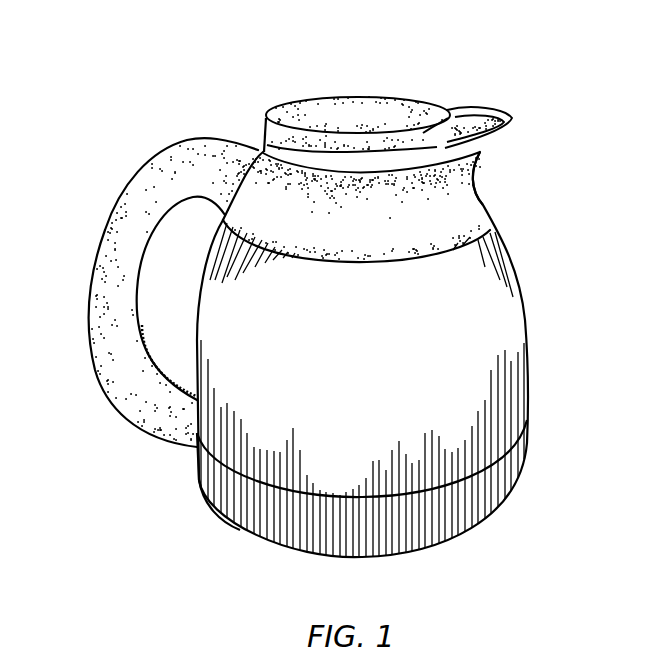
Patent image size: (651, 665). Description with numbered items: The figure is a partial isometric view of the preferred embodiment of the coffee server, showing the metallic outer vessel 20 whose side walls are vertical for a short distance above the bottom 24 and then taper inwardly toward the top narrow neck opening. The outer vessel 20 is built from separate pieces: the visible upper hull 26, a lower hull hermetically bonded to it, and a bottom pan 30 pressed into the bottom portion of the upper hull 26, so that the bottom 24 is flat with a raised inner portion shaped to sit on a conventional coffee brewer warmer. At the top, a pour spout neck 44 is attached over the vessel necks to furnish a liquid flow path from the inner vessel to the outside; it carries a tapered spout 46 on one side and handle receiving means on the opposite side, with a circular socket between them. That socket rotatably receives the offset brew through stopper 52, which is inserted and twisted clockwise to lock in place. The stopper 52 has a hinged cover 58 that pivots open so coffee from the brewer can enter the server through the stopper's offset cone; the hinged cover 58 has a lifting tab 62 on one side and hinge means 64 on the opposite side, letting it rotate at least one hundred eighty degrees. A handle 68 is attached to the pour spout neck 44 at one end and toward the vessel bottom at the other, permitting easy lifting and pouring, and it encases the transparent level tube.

The outer vessel 20 is at (534, 307).
The bottom 24 is at (470, 531).
The upper hull 26 is at (520, 393).
The bottom pan 30 is at (233, 514).
The pour spout neck 44 is at (484, 203).
The tapered spout 46 is at (514, 120).
The offset brew through stopper 52 is at (324, 87).
The hinged cover 58 is at (397, 100).
The lifting tab 62 is at (448, 113).
The hinge means 64 is at (267, 112).
The handle 68 is at (110, 213).